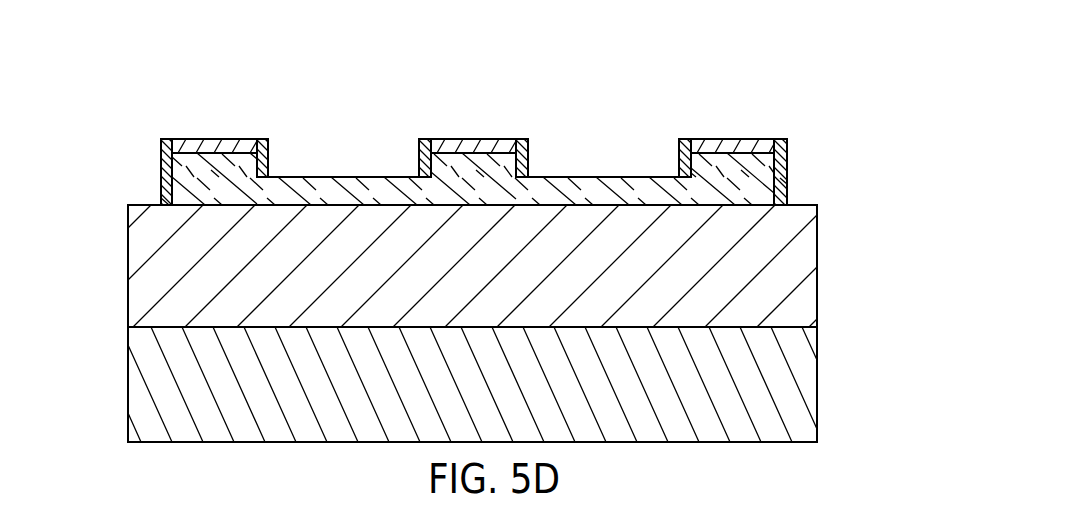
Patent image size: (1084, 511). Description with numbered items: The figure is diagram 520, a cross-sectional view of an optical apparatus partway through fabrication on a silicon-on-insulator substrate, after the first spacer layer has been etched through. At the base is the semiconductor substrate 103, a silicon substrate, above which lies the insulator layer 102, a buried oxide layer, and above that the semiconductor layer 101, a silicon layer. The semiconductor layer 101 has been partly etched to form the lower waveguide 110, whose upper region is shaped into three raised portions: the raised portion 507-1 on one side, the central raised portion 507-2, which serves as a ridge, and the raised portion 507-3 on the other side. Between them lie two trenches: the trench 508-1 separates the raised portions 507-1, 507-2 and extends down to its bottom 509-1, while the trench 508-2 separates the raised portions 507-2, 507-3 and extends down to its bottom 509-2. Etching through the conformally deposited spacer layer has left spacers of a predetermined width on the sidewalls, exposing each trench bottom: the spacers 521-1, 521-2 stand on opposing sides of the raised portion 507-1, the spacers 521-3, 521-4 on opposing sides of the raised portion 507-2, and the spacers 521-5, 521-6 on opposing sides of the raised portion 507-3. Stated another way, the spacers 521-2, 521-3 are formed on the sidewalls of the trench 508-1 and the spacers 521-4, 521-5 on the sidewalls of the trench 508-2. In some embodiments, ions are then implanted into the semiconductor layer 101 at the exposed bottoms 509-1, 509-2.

The diagram 520 is at (860, 55).
The semiconductor layer 101 is at (192, 184).
The insulator layer 102 is at (817, 283).
The semiconductor substrate 103 is at (817, 367).
The lower waveguide 110 is at (615, 190).
The raised portion 507-1 is at (200, 156).
The raised portion 507-2 is at (472, 155).
The raised portion 507-3 is at (740, 165).
The trench 508-1 is at (371, 100).
The trench 508-2 is at (614, 100).
The bottom 509-1 is at (322, 176).
The bottom 509-2 is at (562, 175).
The spacer 521-1 is at (162, 151).
The spacer 521-2 is at (270, 152).
The spacer 521-3 is at (420, 160).
The spacer 521-4 is at (522, 153).
The spacer 521-5 is at (679, 158).
The spacer 521-6 is at (787, 176).